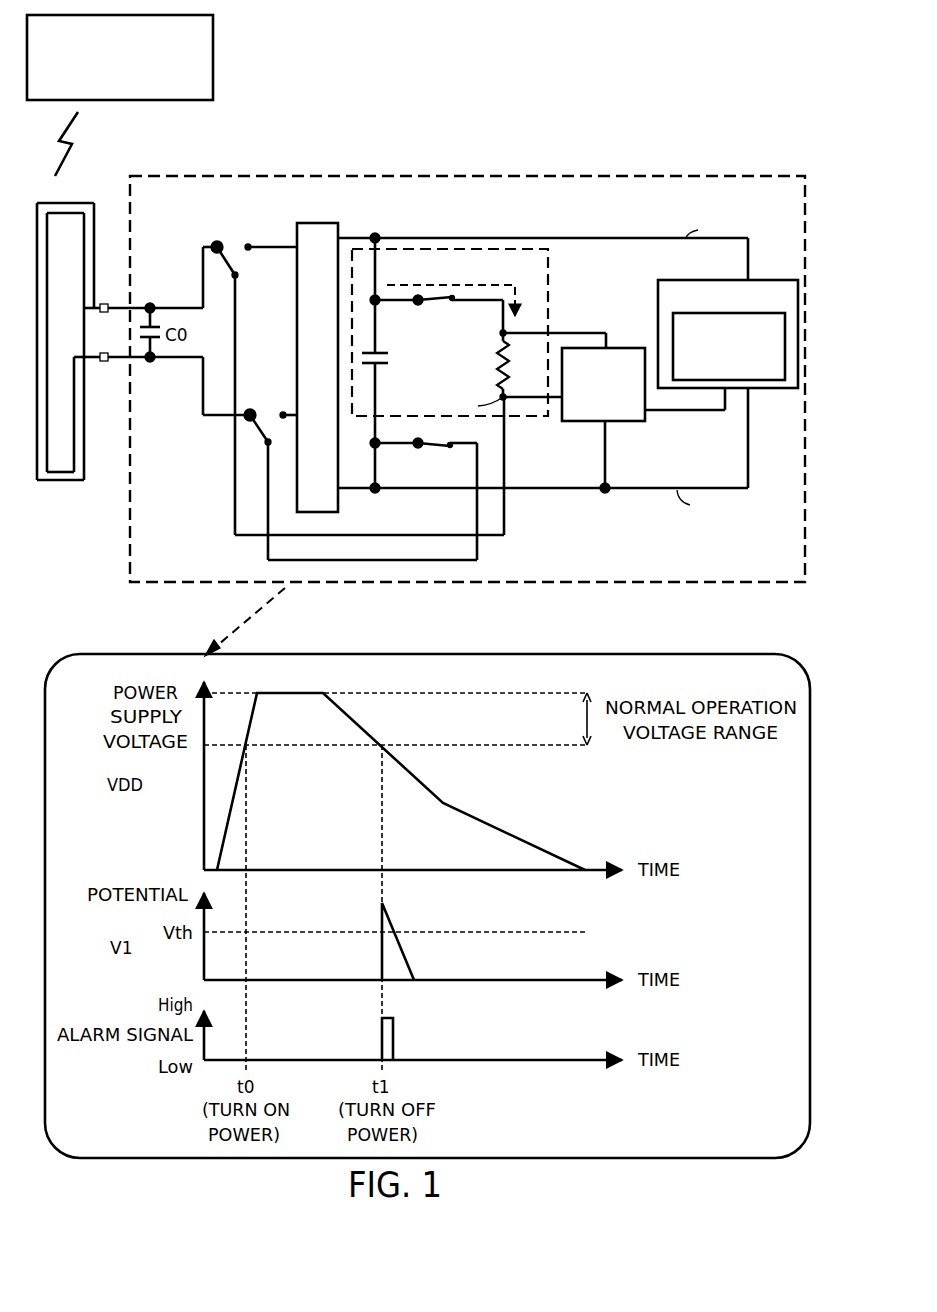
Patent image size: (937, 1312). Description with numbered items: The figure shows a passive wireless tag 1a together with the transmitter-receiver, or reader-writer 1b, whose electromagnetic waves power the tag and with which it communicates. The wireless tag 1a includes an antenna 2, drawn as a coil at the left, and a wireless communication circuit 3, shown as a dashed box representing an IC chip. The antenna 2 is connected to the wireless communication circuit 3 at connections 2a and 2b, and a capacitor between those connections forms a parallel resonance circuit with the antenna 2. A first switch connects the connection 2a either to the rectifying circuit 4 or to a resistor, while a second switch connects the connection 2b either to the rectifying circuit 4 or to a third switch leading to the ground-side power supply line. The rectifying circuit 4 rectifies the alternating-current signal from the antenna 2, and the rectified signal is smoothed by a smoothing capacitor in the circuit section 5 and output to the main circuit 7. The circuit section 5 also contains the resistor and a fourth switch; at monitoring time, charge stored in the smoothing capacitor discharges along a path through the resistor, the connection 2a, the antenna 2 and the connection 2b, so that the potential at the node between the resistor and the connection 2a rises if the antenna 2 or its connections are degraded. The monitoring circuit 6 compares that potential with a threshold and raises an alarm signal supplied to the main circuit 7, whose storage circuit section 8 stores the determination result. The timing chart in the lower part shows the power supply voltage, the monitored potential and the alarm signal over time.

The wireless tag 1a is at (650, 99).
The transmitter-receiver (reader-writer) 1b is at (213, 60).
The antenna 2 is at (80, 202).
The connection 2a is at (103, 303).
The connection 2b is at (104, 362).
The wireless communication circuit 3 is at (232, 176).
The rectifying circuit 4 is at (302, 222).
The circuit section 5 is at (528, 249).
The monitoring circuit 6 is at (620, 346).
The main circuit 7 is at (765, 280).
The storage circuit section 8 is at (768, 382).